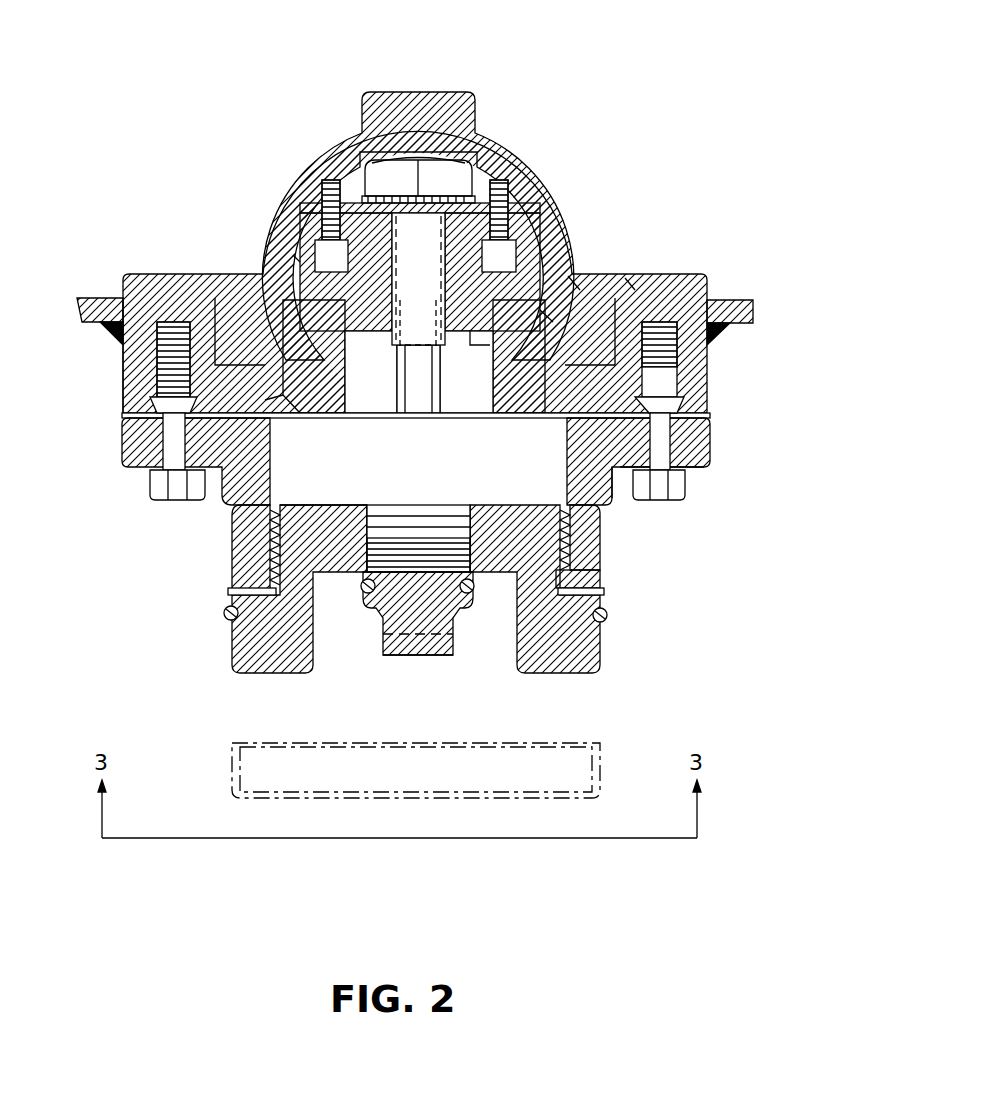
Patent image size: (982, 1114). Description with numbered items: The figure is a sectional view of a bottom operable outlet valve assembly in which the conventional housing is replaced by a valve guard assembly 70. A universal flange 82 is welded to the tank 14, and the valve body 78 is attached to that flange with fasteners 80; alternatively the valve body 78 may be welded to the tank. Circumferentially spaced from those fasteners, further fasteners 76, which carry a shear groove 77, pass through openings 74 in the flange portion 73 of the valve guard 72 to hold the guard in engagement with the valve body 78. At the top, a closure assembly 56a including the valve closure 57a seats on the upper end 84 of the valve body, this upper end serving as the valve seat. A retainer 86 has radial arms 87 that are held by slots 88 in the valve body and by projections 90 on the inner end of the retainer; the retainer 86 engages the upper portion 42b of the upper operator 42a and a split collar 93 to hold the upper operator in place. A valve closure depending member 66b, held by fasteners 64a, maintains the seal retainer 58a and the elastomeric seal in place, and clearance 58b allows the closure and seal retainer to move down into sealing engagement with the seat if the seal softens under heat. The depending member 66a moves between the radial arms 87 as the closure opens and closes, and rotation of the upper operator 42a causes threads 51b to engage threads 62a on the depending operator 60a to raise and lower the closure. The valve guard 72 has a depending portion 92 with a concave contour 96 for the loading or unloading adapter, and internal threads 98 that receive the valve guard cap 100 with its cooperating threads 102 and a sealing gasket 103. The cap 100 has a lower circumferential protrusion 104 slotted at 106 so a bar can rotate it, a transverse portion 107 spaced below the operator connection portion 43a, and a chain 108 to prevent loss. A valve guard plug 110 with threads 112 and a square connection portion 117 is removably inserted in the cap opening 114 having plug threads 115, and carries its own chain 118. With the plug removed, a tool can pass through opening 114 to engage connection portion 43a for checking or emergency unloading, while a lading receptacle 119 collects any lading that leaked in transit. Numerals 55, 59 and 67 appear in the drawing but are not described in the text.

The tank 14 is at (745, 300).
The upper operator 42a is at (448, 378).
The upper portion of upper operator 42b is at (296, 258).
The operator connection portion 43a is at (440, 413).
The threads 51b is at (545, 203).
The flange 55 is at (135, 360).
The closure assembly 56a is at (431, 186).
The valve closure 57a is at (500, 145).
The seal retainer 58a is at (578, 255).
The clearance 58b is at (560, 262).
The gasket 59 is at (572, 290).
The depending operator 60a is at (440, 254).
The threads 62a is at (420, 309).
The fasteners 64a is at (545, 177).
The depending member 66a is at (563, 200).
The valve closure depending member 66b is at (548, 322).
The seal 67 is at (628, 290).
The valve guard assembly 70 is at (402, 603).
The valve guard 72 is at (610, 470).
The flange portion 73 is at (697, 440).
The openings 74 is at (700, 467).
The fasteners 76 is at (665, 497).
The shear groove 77 is at (125, 425).
The valve body 78 is at (697, 392).
The fasteners 80 is at (668, 363).
The universal flange 82 is at (680, 283).
The upper end of valve body 84 is at (620, 285).
The retainer 86 is at (318, 395).
The radial arms 87 is at (322, 365).
The slots 88 is at (275, 428).
The projections 90 is at (267, 400).
The depending portion 92 is at (578, 532).
The split collar 93 is at (470, 330).
The concave contour 96 is at (590, 540).
The internal threads 98 is at (585, 578).
The valve guard cap 100 is at (605, 610).
The cooperating threads 102 is at (275, 552).
The sealing gasket 103 is at (248, 591).
The lower circumferential protrusion 104 is at (590, 655).
The slots 106 is at (470, 665).
The transverse portion 107 is at (507, 540).
The chain 108 is at (226, 619).
The valve guard plug 110 is at (430, 605).
The threads 112 is at (462, 545).
The cap opening 114 is at (405, 522).
The plug threads 115 is at (372, 540).
The square connection portion 117 is at (393, 660).
The chain 118 is at (368, 595).
The lading receptacle 119 is at (232, 780).